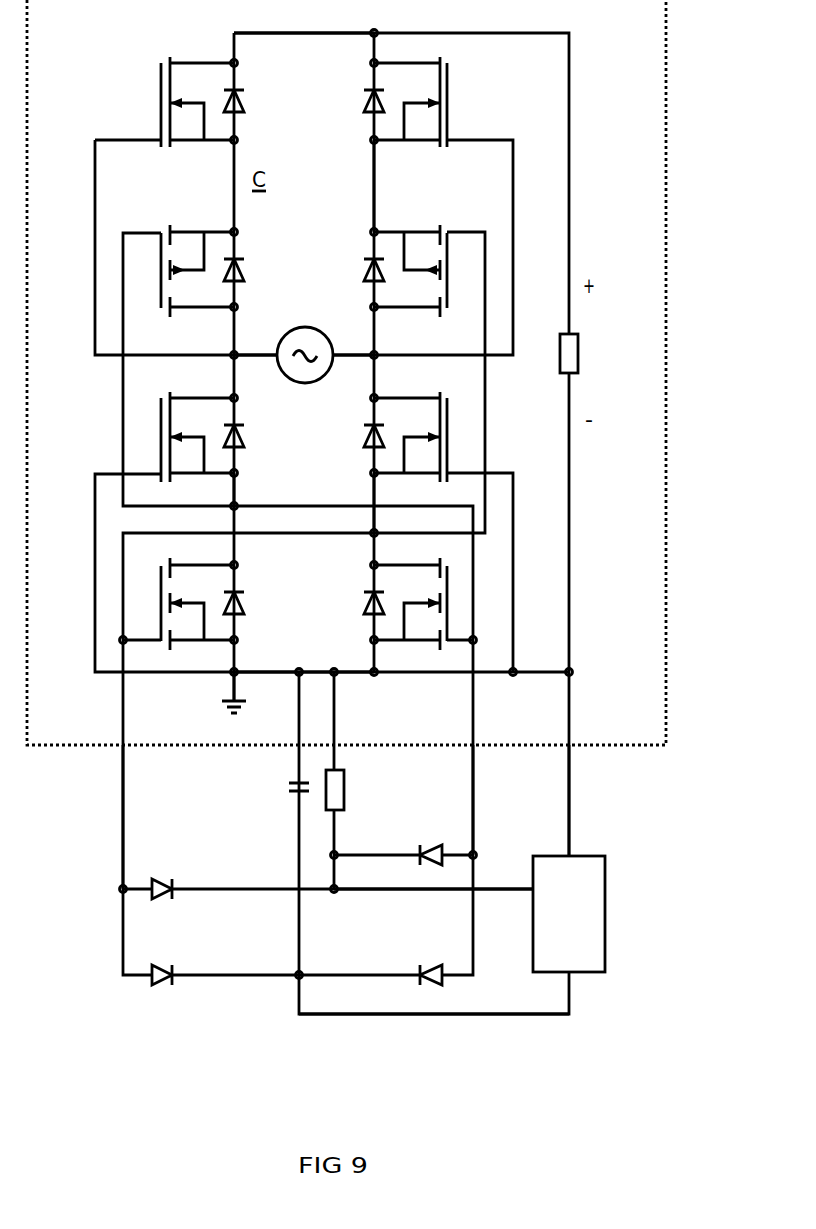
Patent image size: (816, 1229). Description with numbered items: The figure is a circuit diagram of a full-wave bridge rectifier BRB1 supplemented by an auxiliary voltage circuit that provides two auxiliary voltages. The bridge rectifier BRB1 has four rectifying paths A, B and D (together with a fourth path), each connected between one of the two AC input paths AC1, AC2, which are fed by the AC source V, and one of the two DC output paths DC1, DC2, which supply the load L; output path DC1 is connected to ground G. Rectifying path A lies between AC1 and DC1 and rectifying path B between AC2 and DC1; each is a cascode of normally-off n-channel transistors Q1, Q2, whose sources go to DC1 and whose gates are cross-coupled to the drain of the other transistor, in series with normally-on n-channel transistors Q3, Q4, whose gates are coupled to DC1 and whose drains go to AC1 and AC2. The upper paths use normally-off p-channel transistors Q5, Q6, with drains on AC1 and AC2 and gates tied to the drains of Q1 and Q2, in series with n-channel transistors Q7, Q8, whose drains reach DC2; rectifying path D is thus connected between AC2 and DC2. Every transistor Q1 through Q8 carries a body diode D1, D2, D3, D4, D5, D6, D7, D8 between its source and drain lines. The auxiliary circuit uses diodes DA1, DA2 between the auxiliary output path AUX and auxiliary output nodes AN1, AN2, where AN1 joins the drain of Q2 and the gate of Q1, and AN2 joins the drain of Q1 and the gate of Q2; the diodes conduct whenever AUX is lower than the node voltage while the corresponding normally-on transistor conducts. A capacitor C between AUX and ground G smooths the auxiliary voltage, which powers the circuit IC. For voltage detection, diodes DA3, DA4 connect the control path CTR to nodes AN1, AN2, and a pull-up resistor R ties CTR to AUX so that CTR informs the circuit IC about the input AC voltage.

The bridge rectifier BRB1 is at (107, 24).
The normally-off n-channel field-effect transistor Q1 is at (197, 645).
The normally-off n-channel field-effect transistor Q2 is at (422, 647).
The normally-on n-channel field-effect transistor Q3 is at (197, 424).
The normally-on n-channel field-effect transistor Q4 is at (410, 424).
The normally-off p-channel field-effect transistor Q5 is at (197, 258).
The normally-off p-channel field-effect transistor Q6 is at (410, 258).
The normally-off n-channel field-effect transistor Q7 is at (197, 117).
The normally-on n-channel field-effect transistor Q8 is at (410, 117).
The body diode D1 is at (249, 592).
The body diode D2 is at (358, 592).
The body diode D3 is at (249, 425).
The body diode D4 is at (358, 425).
The body diode D5 is at (249, 259).
The body diode D6 is at (358, 259).
The body diode D7 is at (249, 94).
The body diode D8 is at (358, 94).
The diode DA1 is at (162, 961).
The diode DA2 is at (433, 962).
The diode DA3 is at (162, 876).
The diode DA4 is at (433, 842).
The AC source V is at (305, 337).
The load L is at (585, 353).
The capacitor C is at (288, 789).
The pull-up resistor R is at (346, 790).
The circuit IC is at (605, 889).
The output path DC1 is at (401, 749).
The output path DC2 is at (304, 50).
The input path AC1 is at (232, 341).
The input path AC2 is at (376, 341).
The ground G is at (221, 702).
The auxiliary output node AN1 is at (99, 817).
The auxiliary output node AN2 is at (443, 800).
The control path CTR is at (433, 874).
The auxiliary output path AUX is at (434, 1000).
The rectifying path A is at (270, 487).
The rectifying path B is at (355, 487).
The rectifying path D is at (356, 191).